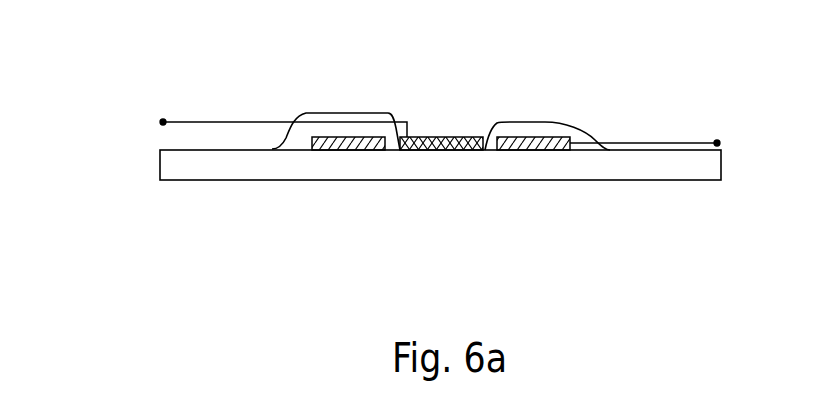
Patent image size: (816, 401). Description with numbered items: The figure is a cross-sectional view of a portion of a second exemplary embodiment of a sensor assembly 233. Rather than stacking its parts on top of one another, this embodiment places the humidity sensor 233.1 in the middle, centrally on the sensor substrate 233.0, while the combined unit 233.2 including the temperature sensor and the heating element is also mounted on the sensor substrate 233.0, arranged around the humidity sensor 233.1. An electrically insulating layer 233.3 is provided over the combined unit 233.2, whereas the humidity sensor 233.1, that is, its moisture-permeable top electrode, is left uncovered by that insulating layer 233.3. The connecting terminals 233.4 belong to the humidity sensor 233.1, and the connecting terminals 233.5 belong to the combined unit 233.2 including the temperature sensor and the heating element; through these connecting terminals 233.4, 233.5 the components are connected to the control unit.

The sensor assembly 233 is at (122, 180).
The sensor substrate 233.0 is at (230, 168).
The humidity sensor 233.1 is at (428, 137).
The combined unit including the temperature sensor and the heating element 233.2 is at (342, 140).
The electrically insulating layer 233.3 is at (508, 121).
The connecting terminals of the humidity sensor 233.4 is at (163, 120).
The connecting terminals of the combined unit 233.5 is at (718, 141).